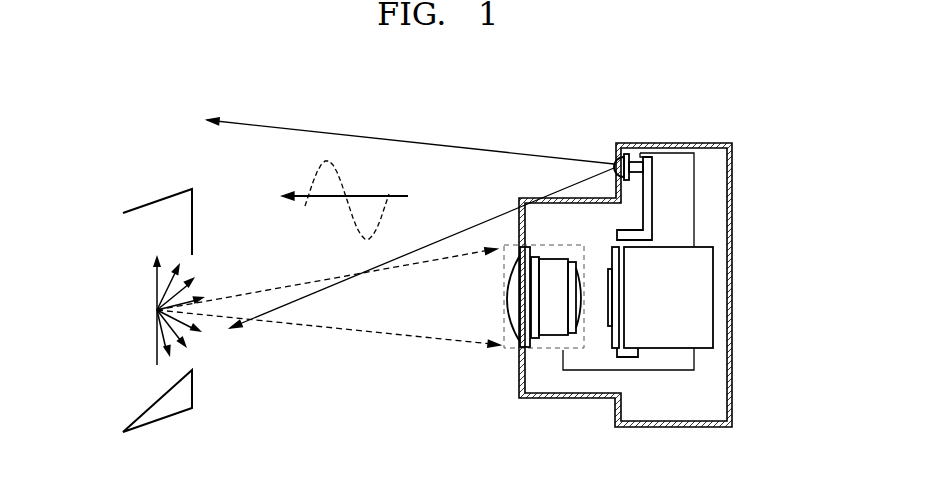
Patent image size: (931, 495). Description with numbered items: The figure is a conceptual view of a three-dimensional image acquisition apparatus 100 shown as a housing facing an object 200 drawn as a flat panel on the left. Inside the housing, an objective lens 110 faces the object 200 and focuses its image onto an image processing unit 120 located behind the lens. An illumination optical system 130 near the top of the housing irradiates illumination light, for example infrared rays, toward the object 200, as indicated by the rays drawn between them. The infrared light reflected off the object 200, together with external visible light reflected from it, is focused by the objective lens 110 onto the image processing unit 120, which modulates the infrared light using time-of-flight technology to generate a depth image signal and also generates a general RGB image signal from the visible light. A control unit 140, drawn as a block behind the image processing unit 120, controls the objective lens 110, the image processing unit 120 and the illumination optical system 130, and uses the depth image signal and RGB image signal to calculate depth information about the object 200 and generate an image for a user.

The 3D image acquisition apparatus 100 is at (715, 128).
The objective lens 110 is at (547, 353).
The image processing unit 120 is at (615, 337).
The illumination optical system 130 is at (630, 163).
The control unit 140 is at (710, 298).
The object 200 is at (163, 415).